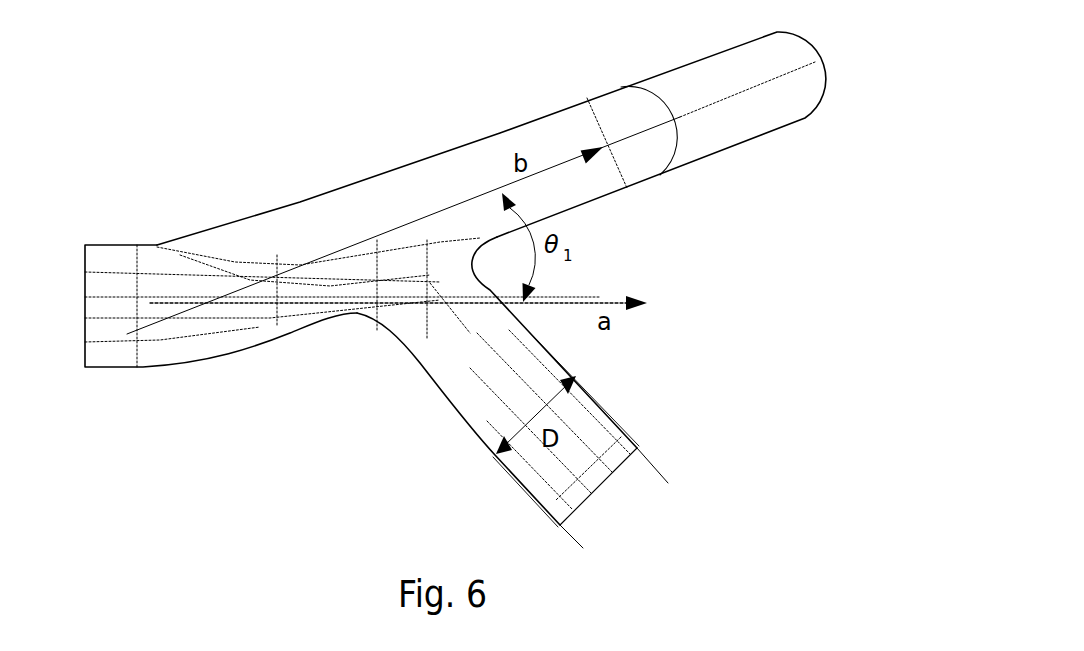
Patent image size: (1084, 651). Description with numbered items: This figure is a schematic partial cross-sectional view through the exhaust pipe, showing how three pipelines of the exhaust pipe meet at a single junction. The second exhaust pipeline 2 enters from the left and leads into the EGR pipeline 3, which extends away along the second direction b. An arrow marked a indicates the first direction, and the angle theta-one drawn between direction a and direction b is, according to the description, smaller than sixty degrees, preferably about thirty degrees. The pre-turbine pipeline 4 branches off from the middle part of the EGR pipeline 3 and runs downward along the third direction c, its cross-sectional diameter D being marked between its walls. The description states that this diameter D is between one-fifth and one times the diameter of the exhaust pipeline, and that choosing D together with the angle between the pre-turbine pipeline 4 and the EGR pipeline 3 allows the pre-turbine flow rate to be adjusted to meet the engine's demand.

The second exhaust pipeline 2 is at (145, 270).
The EGR pipeline 3 is at (340, 207).
The pre-turbine pipeline 4 is at (493, 378).